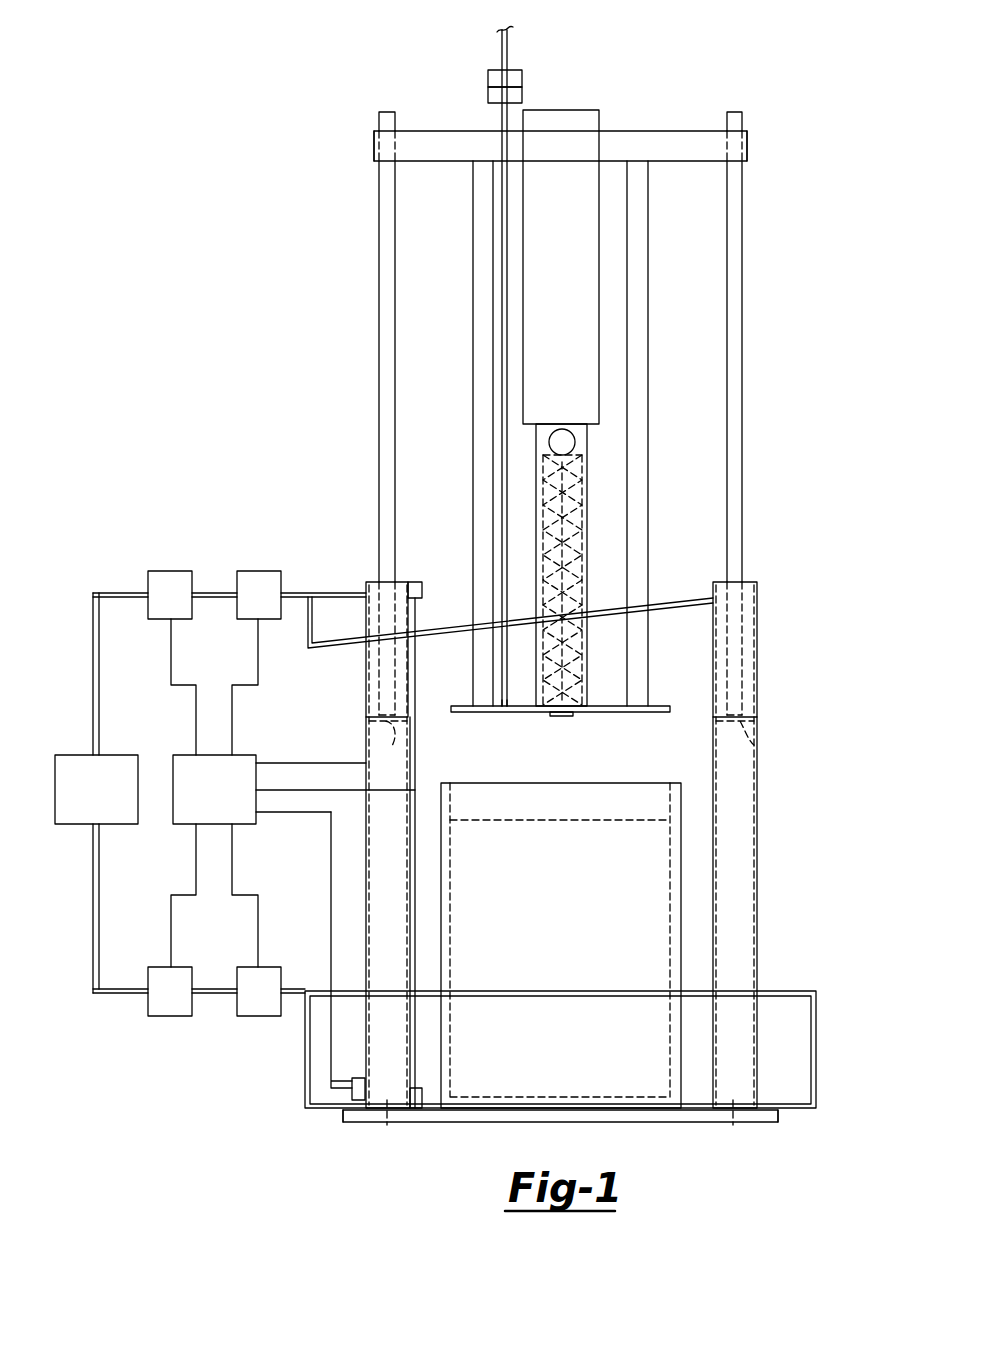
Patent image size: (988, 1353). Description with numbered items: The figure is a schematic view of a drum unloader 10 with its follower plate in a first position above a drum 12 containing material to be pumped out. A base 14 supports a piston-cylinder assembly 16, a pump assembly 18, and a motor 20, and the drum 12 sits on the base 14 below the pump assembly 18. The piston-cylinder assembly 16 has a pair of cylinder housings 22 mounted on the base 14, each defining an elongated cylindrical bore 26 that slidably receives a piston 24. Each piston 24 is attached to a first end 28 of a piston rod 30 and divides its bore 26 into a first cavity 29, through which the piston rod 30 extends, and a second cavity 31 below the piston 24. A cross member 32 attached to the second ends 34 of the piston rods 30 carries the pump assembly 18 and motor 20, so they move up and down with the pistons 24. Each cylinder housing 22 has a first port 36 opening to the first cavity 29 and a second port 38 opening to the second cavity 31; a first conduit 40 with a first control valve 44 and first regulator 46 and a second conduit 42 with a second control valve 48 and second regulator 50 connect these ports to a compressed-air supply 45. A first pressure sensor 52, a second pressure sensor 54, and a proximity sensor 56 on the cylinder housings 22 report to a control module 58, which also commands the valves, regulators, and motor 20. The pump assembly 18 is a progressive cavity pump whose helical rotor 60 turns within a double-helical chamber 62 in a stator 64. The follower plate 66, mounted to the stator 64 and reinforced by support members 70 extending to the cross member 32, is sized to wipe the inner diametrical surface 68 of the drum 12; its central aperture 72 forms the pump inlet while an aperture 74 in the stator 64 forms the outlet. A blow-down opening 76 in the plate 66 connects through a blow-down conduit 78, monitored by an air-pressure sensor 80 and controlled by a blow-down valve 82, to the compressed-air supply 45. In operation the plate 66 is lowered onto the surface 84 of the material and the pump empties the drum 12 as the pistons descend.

The drum unloader 10 is at (807, 39).
The drum 12 is at (633, 945).
The base 14 is at (560, 1140).
The piston-cylinder assembly 16 is at (579, 952).
The pump assembly 18 is at (560, 580).
The motor 20 is at (603, 267).
The cylinder housing 22 is at (596, 912).
The piston 24 is at (566, 739).
The cylindrical bore 26 is at (602, 845).
The first end 28 is at (563, 702).
The first cavity 29 is at (573, 603).
The piston rod 30 is at (555, 347).
The second cavity 31 is at (532, 1148).
The cross member 32 is at (560, 108).
The second end 34 is at (561, 135).
The first port 36 is at (539, 619).
The second port 38 is at (550, 1139).
The first conduit 40 is at (502, 583).
The second conduit 42 is at (229, 793).
The first control valve 44 is at (242, 640).
The compressed-air supply 45 is at (96, 793).
The first regulator 46 is at (156, 640).
The second control valve 48 is at (254, 957).
The second regulator 50 is at (153, 957).
The first pressure sensor 52 is at (419, 807).
The second pressure sensor 54 is at (455, 1078).
The proximity sensor 56 is at (296, 971).
The control module 58 is at (274, 767).
The rotor 60 is at (501, 580).
The chamber 62 is at (621, 580).
The stator 64 is at (617, 565).
The follower plate 66 is at (572, 732).
The inner diametrical surface 68 is at (560, 920).
The support member 70 is at (557, 433).
The aperture 72 is at (561, 740).
The aperture 74 is at (561, 407).
The blow-down opening 76 is at (480, 722).
The blow-down conduit 78 is at (470, 366).
The air-pressure sensor 80 is at (460, 83).
The blow-down valve 82 is at (466, 61).
The surface 84 is at (560, 850).